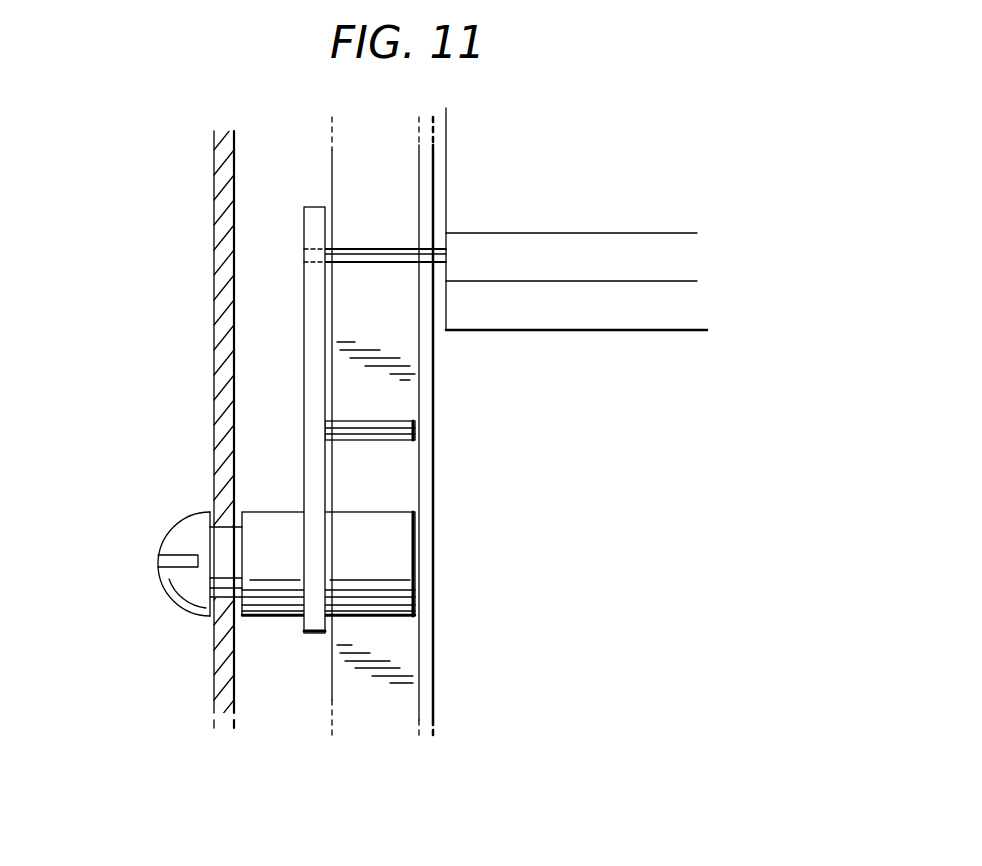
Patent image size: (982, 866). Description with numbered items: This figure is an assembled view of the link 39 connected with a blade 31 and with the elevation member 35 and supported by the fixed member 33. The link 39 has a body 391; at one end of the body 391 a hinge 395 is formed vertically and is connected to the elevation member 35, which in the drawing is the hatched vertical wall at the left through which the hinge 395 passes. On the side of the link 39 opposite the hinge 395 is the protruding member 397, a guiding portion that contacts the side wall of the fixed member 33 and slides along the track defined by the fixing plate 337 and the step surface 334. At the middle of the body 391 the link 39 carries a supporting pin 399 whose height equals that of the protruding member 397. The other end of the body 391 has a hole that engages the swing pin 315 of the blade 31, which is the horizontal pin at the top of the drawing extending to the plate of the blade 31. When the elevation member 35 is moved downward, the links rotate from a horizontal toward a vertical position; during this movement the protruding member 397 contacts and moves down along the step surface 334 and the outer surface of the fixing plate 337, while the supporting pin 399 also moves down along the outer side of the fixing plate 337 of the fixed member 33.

The blade 31 is at (608, 320).
The fixed member 33 is at (437, 668).
The elevation member 35 is at (214, 253).
The link 39 is at (287, 617).
The swing pin 315 is at (402, 268).
The step surface 334 is at (378, 476).
The fixing plate 337 is at (427, 613).
The body 391 is at (308, 345).
The hinge 395 is at (190, 517).
The protruding member 397 is at (393, 561).
The supporting pin 399 is at (393, 443).